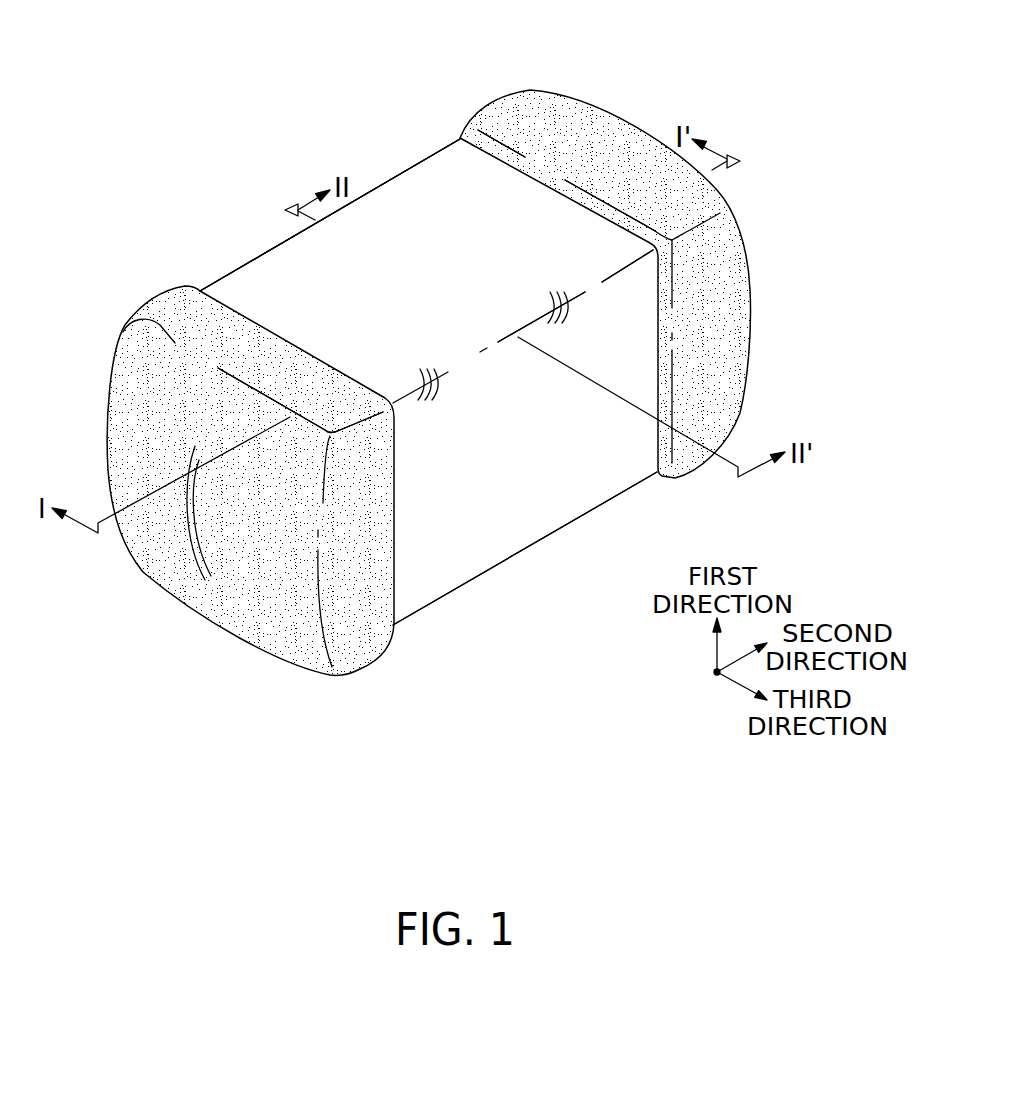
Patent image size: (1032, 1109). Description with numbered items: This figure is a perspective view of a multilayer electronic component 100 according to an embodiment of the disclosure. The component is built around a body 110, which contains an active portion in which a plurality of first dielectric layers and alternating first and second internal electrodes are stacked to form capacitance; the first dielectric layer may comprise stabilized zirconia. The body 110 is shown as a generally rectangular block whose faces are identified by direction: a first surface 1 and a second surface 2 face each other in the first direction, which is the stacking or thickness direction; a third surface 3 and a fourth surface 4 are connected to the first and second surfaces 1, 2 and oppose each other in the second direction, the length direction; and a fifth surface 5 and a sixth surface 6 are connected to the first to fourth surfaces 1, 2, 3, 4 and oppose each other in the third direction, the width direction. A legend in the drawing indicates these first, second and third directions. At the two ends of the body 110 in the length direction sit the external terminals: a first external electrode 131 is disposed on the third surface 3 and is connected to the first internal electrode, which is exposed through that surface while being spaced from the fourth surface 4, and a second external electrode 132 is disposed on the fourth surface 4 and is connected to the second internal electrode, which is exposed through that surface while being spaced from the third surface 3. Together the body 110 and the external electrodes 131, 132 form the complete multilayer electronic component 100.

The multilayer electronic component 100 is at (300, 28).
The body 110 is at (387, 200).
The first external electrode 131 is at (164, 291).
The second external electrode 132 is at (509, 104).
The first surface 1 is at (477, 558).
The second surface 2 is at (447, 193).
The third surface 3 is at (166, 556).
The fourth surface 4 is at (540, 202).
The fifth surface 5 is at (248, 281).
The sixth surface 6 is at (586, 480).